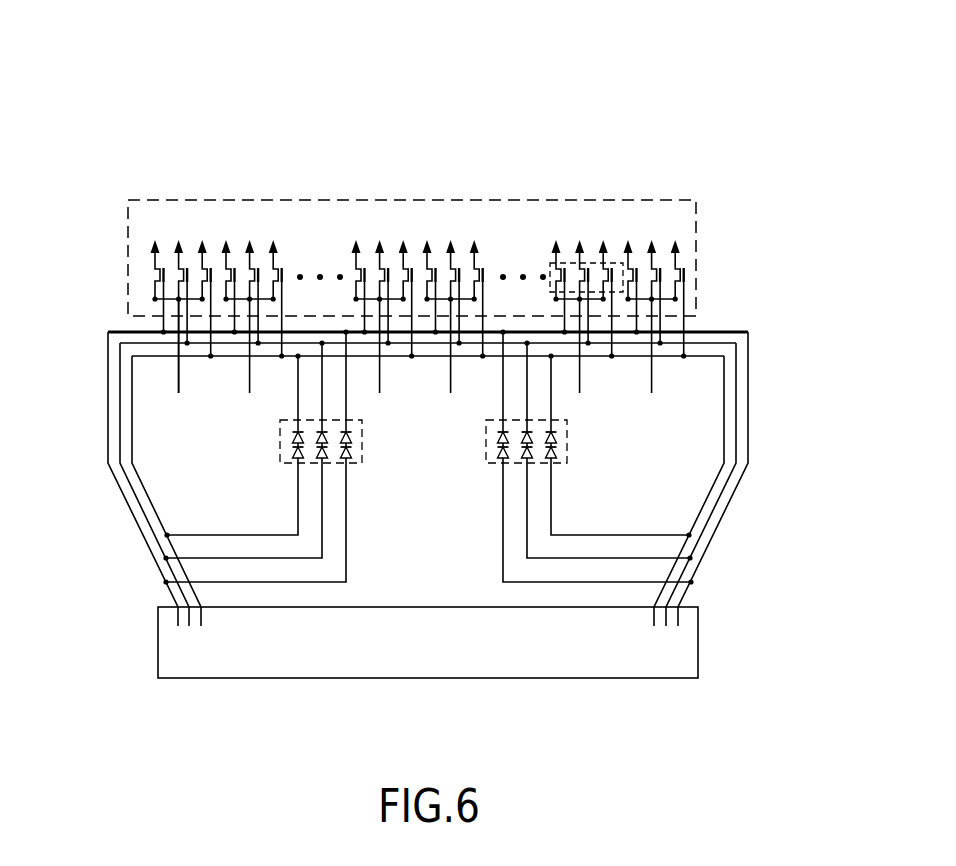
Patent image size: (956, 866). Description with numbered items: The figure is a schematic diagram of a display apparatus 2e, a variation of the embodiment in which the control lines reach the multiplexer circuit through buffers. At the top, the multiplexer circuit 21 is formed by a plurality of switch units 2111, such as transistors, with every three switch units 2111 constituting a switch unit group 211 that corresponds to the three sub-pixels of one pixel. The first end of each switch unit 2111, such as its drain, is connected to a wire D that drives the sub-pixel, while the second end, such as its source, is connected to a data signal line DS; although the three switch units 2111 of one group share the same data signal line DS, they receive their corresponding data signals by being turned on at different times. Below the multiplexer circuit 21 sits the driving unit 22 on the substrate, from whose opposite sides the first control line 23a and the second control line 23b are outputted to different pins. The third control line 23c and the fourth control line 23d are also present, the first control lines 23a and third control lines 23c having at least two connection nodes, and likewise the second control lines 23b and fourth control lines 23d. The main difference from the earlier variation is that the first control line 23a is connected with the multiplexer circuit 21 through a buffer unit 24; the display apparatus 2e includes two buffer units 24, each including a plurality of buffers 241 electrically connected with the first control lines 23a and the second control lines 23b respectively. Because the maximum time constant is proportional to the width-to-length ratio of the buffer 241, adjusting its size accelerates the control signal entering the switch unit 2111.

The display apparatus 2e is at (202, 82).
The multiplexer circuit 21 is at (367, 198).
The switch unit group 211 is at (570, 263).
The switch unit 2111 is at (158, 277).
The wire D is at (156, 270).
The data signal line DS is at (179, 383).
The driving unit 22 is at (698, 638).
The first control line 23a is at (290, 475).
The second control line 23b is at (563, 482).
The third control line 23c is at (102, 385).
The fourth control line 23d is at (755, 412).
The buffer unit 24 is at (487, 442).
The buffer 241 is at (552, 438).